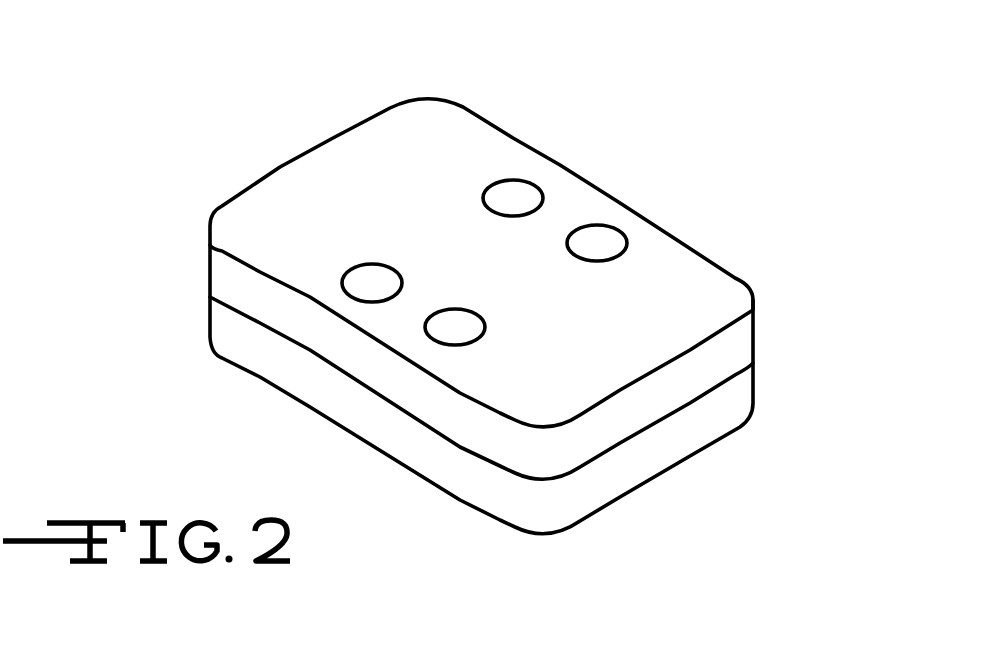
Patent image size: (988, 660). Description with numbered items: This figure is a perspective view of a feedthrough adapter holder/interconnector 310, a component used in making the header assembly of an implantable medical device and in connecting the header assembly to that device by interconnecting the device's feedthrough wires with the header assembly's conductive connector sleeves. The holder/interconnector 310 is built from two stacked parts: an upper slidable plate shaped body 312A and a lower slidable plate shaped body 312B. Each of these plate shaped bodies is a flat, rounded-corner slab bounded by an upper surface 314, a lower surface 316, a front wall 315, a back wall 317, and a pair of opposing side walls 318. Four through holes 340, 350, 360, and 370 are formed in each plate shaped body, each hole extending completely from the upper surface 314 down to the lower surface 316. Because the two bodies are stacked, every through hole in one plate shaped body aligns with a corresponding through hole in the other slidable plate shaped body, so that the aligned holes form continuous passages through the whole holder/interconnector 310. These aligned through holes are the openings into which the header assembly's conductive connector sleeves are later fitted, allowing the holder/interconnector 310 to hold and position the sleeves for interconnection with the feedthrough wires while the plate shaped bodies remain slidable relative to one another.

The feedthrough adapter holder/interconnector 310 is at (565, 152).
The upper slidable plate shaped body 312A is at (355, 128).
The lower slidable plate shaped body 312B is at (350, 400).
The upper surface 314 is at (457, 121).
The front wall 315 is at (407, 440).
The lower surface 316 is at (507, 530).
The back wall 317 is at (633, 211).
The opposing side walls 318 is at (212, 276).
The through hole 340 is at (347, 271).
The through hole 350 is at (485, 328).
The through hole 360 is at (484, 197).
The through hole 370 is at (608, 261).